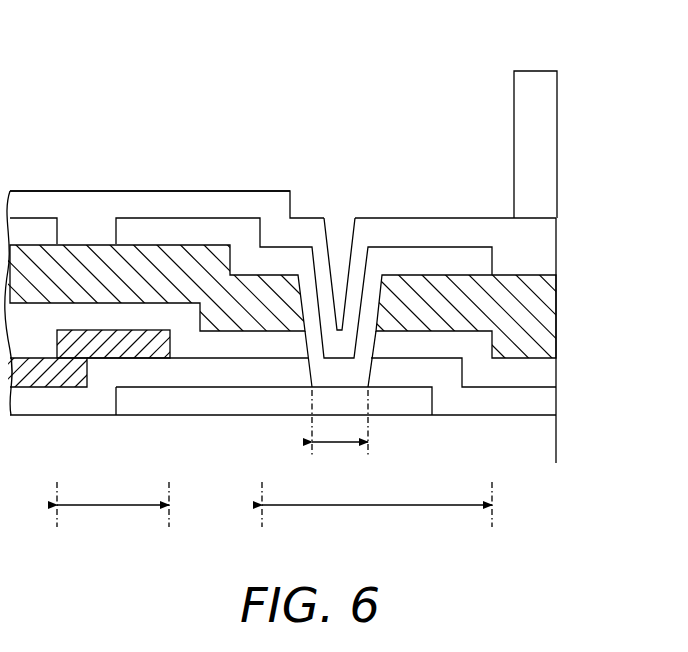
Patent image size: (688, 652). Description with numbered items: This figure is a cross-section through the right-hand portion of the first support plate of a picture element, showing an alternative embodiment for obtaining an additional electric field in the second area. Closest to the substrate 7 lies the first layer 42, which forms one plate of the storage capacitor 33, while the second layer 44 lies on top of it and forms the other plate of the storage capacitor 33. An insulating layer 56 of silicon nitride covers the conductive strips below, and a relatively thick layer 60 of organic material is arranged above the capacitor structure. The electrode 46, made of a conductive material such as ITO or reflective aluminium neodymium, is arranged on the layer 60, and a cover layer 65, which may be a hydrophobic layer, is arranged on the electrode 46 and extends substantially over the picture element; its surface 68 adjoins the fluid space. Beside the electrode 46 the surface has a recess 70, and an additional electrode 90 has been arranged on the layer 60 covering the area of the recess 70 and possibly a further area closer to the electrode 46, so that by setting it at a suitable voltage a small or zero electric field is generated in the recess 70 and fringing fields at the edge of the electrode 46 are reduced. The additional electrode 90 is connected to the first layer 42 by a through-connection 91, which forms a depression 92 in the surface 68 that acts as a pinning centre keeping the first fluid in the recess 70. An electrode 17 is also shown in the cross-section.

The substrate 7 is at (537, 437).
The electrode 17 is at (556, 71).
The storage capacitor 33 is at (113, 510).
The first layer 42 is at (226, 398).
The second layer 44 is at (100, 347).
The electrode 46 is at (33, 232).
The insulating layer 56 is at (41, 397).
The layer 60 is at (538, 309).
The cover layer 65 is at (86, 210).
The surface 68 is at (153, 190).
The recess 70 is at (377, 511).
The additional electrode 90 is at (205, 233).
The through-connection 91 is at (340, 431).
The depression 92 is at (344, 222).